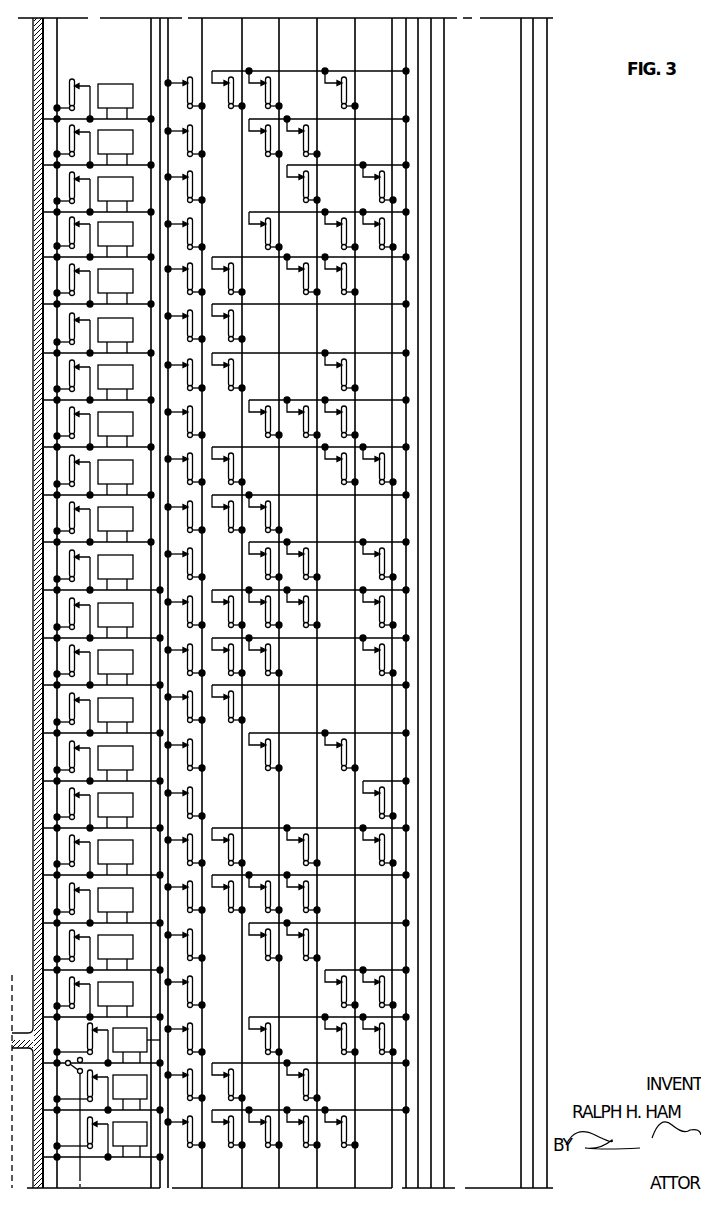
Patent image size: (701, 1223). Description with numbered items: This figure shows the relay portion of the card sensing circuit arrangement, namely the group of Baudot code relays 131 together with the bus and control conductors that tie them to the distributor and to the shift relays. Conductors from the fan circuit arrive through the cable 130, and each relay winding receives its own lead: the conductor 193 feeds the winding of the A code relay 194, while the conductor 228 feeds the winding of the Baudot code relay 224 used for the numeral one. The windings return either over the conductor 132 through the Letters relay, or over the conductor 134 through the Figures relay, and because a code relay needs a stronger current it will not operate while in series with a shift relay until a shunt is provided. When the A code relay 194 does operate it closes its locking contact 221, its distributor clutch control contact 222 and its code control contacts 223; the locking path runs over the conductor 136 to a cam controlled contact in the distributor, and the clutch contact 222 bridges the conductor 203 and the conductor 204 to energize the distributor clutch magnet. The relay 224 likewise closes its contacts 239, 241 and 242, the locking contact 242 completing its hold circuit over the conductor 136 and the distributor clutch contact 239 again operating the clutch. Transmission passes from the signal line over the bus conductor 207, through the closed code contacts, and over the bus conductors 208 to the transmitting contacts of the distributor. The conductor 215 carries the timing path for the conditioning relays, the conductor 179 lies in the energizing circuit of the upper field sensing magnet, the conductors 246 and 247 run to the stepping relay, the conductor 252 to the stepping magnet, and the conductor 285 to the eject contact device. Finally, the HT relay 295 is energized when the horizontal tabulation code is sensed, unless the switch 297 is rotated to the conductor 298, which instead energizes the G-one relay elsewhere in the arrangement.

The cable 130 is at (33, 1082).
The Baudot code relays 131 is at (122, 79).
The conductor 132 is at (160, 53).
The conductor 134 is at (151, 37).
The conductor 136 is at (57, 62).
The conductor 179 is at (444, 72).
The conductor 193 is at (53, 546).
The A code relay 194 is at (126, 517).
The conductor 203 is at (178, 1182).
The conductor 204 is at (242, 46).
The bus conductor 207 is at (410, 480).
The bus conductors 208 is at (273, 1146).
The conductor 215 is at (431, 226).
The locking contact 221 is at (80, 510).
The distributor clutch control contact 222 is at (184, 513).
The code control contacts 223 is at (253, 502).
The Baudot code relay 224 is at (128, 618).
The conductor 228 is at (55, 642).
The distributor clutch contact 239 is at (184, 603).
The contacts 241 is at (376, 607).
The locking contact 242 is at (67, 618).
The conductor 246 is at (418, 1004).
The conductor 247 is at (533, 155).
The conductor 252 is at (521, 117).
The conductor 285 is at (547, 1016).
The HT relay 295 is at (152, 1040).
The switch 297 is at (68, 1061).
The conductor 298 is at (84, 1166).